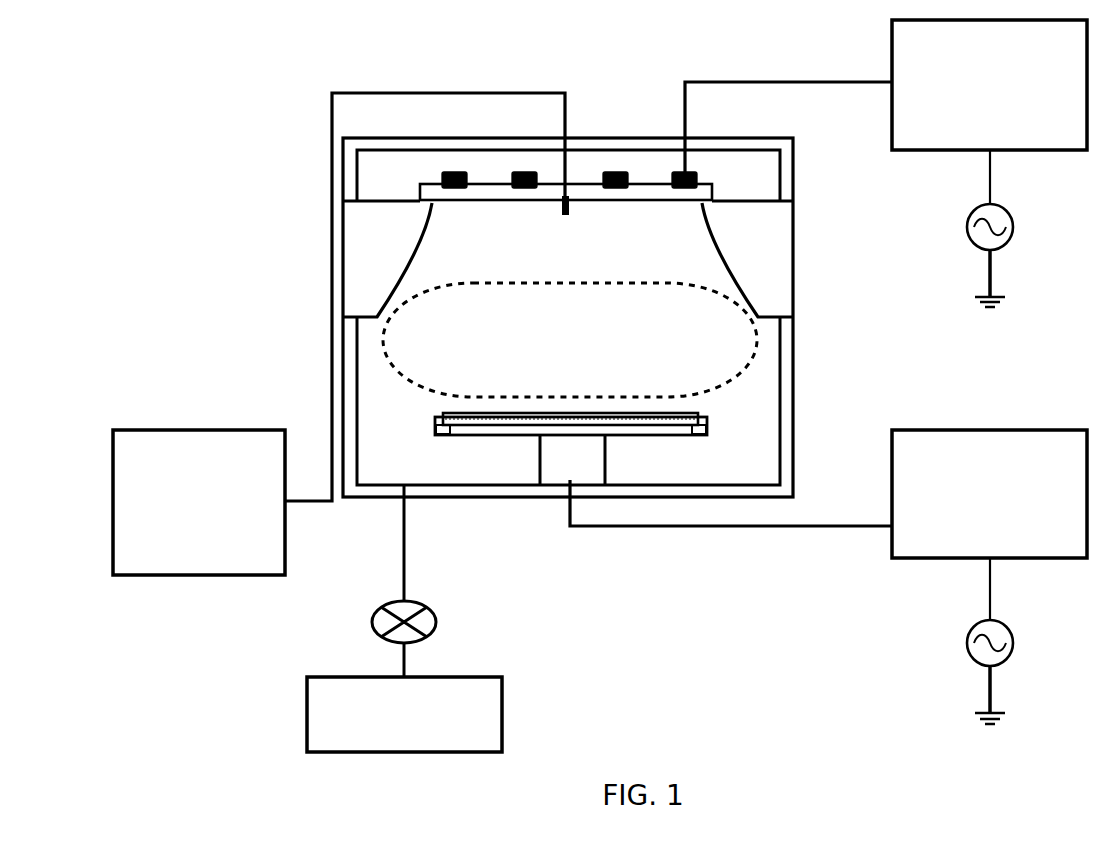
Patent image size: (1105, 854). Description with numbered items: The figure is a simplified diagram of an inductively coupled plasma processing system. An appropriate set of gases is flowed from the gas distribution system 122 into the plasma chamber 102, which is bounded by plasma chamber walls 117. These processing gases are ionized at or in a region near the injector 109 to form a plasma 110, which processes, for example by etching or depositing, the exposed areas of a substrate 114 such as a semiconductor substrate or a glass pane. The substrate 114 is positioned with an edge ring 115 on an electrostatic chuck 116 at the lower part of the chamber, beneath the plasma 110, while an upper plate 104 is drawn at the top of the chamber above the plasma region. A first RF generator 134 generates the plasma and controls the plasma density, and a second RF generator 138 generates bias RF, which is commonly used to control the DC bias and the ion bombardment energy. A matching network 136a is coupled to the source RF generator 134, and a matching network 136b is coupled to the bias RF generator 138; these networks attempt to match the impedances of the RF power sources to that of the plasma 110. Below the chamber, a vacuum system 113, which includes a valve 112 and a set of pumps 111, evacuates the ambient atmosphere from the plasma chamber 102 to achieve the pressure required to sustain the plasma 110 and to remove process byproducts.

The plasma chamber 102 is at (568, 317).
The showerhead / upper electrode plate 104 is at (525, 196).
The injector 109 is at (573, 199).
The plasma 110 is at (570, 340).
The set of pumps 111 is at (404, 714).
The valve 112 is at (437, 615).
The vacuum system 113 is at (405, 530).
The substrate 114 is at (692, 416).
The edge ring 115 is at (446, 434).
The electrostatic chuck 116 is at (722, 492).
The plasma chamber walls 117 is at (794, 333).
The gas distribution system 122 is at (199, 502).
The first RF generator 134 is at (968, 242).
The matching network 136a is at (886, 96).
The matching network 136b is at (989, 494).
The second RF generator 138 is at (1012, 634).